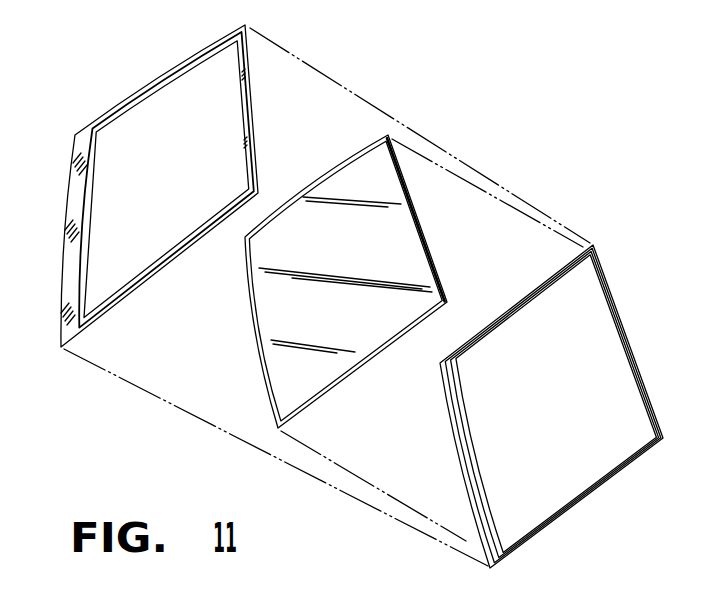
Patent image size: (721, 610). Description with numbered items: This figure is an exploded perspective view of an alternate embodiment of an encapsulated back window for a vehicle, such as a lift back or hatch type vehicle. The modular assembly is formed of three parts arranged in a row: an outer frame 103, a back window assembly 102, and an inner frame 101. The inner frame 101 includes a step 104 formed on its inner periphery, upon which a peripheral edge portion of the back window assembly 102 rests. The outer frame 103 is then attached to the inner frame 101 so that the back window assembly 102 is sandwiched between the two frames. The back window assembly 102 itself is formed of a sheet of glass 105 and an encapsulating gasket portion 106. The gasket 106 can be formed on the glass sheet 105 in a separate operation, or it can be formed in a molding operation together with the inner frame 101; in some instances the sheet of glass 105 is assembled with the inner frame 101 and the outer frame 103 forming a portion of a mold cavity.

The inner frame 101 is at (566, 406).
The back window assembly 102 is at (321, 266).
The outer frame 103 is at (94, 101).
The step 104 is at (517, 311).
The sheet of glass 105 is at (282, 301).
The encapsulating gasket portion 106 is at (364, 369).